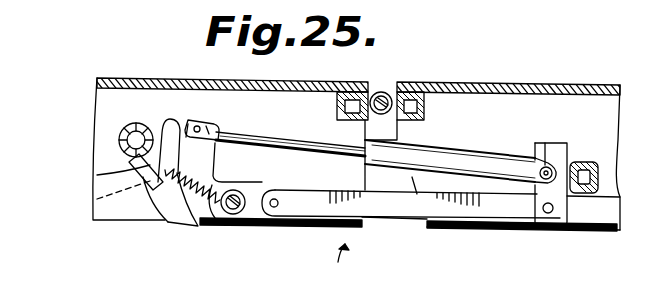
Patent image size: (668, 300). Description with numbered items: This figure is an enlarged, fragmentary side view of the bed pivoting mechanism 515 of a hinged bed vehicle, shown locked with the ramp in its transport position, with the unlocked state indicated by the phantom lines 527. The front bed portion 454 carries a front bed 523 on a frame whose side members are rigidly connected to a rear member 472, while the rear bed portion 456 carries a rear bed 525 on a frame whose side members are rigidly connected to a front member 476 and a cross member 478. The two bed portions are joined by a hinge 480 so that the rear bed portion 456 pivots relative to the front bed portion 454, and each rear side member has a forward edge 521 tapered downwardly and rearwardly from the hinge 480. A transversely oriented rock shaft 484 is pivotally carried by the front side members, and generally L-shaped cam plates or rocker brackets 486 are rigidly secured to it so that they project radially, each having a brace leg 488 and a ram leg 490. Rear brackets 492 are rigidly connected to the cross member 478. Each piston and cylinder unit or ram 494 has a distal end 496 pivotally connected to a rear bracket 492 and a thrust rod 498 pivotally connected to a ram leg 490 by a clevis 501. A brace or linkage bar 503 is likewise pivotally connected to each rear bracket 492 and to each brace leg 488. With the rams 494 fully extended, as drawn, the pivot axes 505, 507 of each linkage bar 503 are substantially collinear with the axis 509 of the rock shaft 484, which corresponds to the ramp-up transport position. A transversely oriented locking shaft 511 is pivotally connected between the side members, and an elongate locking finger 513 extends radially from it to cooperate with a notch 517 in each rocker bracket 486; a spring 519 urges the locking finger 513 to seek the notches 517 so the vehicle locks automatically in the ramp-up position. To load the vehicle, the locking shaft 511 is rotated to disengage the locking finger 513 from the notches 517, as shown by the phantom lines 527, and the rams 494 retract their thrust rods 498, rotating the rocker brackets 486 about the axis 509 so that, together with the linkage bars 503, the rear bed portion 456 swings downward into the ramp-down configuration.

The front bed portion 454 is at (182, 95).
The rear bed portion 456 is at (567, 103).
The rear member 472 is at (357, 93).
The front member 476 is at (424, 107).
The cross member 478 is at (632, 197).
The hinge 480 is at (388, 93).
The rock shaft 484 is at (247, 192).
The rocker bracket 486 is at (188, 124).
The brace leg 488 is at (270, 228).
The ram leg 490 is at (190, 122).
The rear bracket 492 is at (567, 150).
The ram 494 is at (490, 160).
The distal end 496 is at (541, 166).
The thrust rod 498 is at (298, 147).
The clevis 501 is at (215, 132).
The linkage bar 503 is at (420, 222).
The pivot axis 505 is at (279, 200).
The pivot axis 507 is at (550, 220).
The axis 509 is at (244, 216).
The locking shaft 511 is at (137, 122).
The locking finger 513 is at (97, 175).
The bed pivoting mechanism 515 is at (322, 262).
The notch 517 is at (152, 225).
The spring 519 is at (198, 225).
The forward edge 521 is at (401, 132).
The front bed 523 is at (117, 78).
The rear bed 525 is at (490, 88).
The phantom lines 527 is at (90, 200).